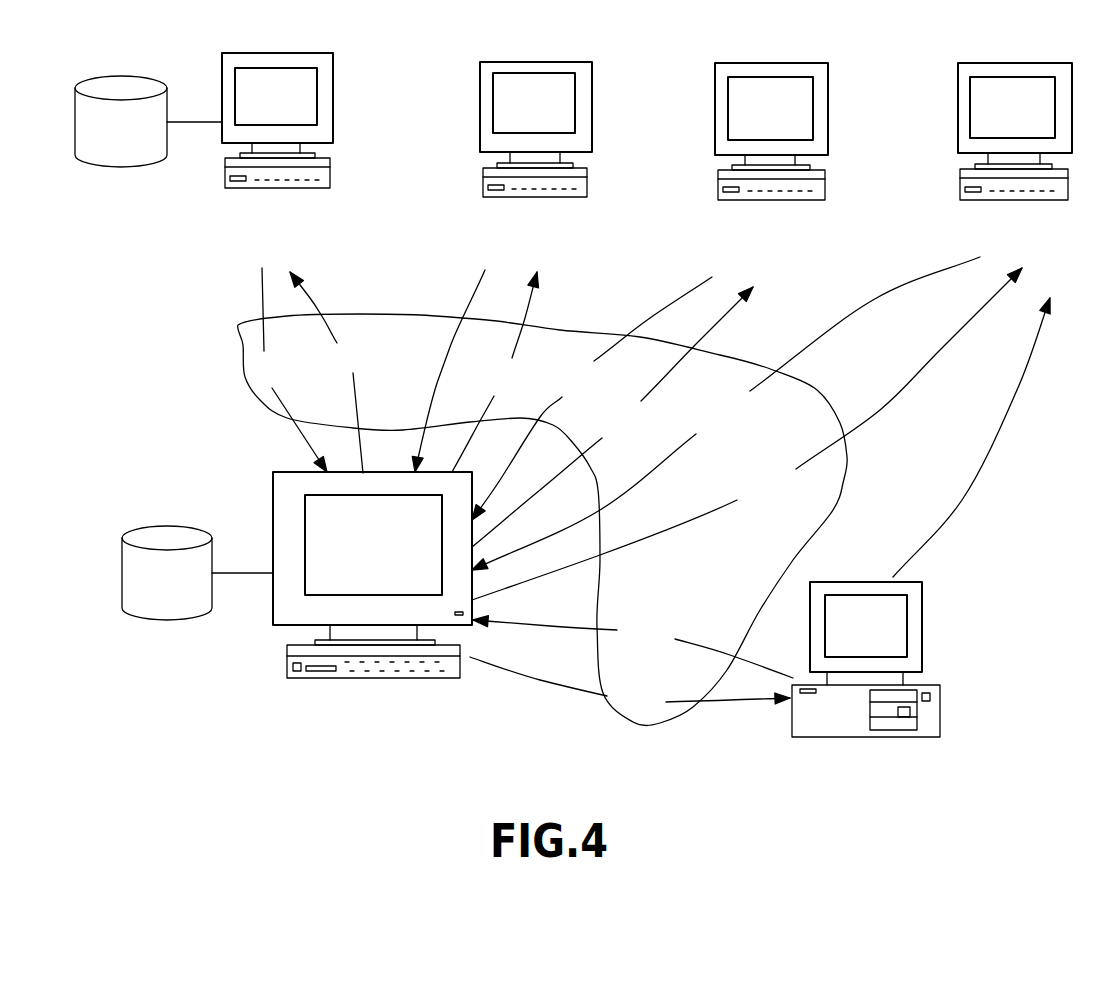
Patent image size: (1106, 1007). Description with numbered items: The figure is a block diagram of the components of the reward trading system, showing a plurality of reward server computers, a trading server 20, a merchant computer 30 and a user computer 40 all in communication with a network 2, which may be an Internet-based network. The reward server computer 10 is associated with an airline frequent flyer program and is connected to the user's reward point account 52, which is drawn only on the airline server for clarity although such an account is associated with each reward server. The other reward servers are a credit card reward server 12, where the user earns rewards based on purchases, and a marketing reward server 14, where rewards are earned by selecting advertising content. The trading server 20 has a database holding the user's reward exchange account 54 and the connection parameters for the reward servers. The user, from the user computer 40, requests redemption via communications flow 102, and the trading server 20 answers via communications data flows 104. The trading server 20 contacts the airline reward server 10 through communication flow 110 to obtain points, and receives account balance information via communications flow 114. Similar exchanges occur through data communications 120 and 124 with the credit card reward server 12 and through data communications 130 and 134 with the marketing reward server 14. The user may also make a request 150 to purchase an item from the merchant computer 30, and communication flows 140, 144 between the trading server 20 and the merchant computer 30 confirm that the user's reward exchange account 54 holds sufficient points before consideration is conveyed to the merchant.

The network 2 is at (787, 418).
The reward server computer 10 is at (273, 53).
The credit card reward server 12 is at (543, 60).
The marketing reward server 14 is at (775, 62).
The trading server 20 is at (275, 632).
The merchant computer 30 is at (1025, 62).
The user computer 40 is at (862, 582).
The reward point account 52 is at (125, 72).
The reward exchange account 54 is at (168, 522).
The communications flow 102 is at (633, 646).
The communications data flows 104 is at (630, 684).
The communication flow 110 is at (334, 372).
The communications flow 114 is at (292, 370).
The data communications 120 is at (495, 372).
The data communications 124 is at (448, 371).
The data communications 130 is at (612, 417).
The data communications 134 is at (592, 398).
The communication flow 140 is at (747, 434).
The communication flow 144 is at (726, 413).
The request 150 is at (971, 437).